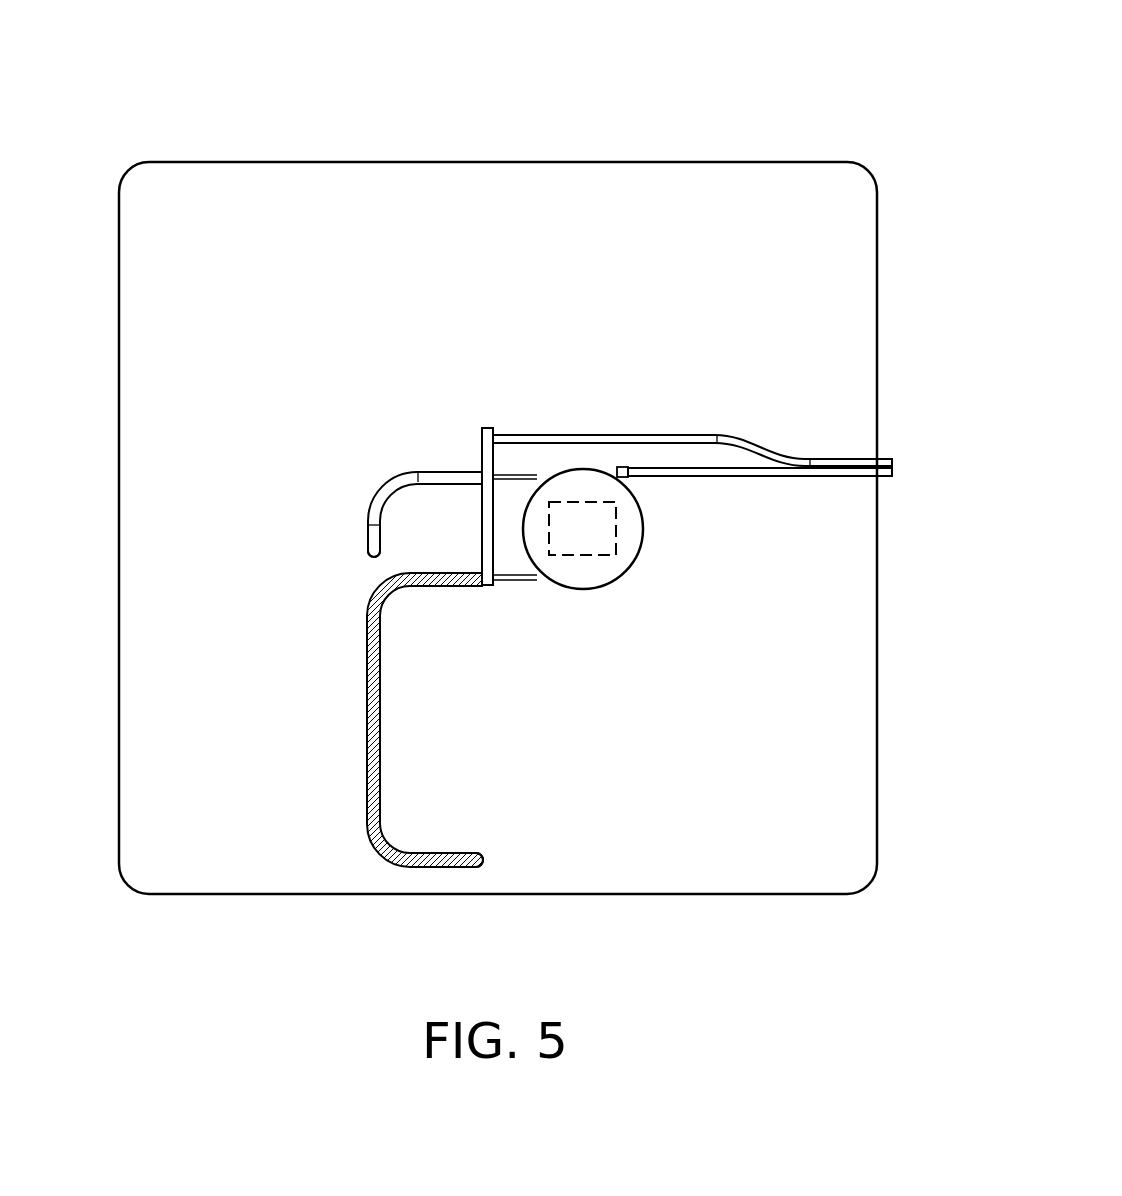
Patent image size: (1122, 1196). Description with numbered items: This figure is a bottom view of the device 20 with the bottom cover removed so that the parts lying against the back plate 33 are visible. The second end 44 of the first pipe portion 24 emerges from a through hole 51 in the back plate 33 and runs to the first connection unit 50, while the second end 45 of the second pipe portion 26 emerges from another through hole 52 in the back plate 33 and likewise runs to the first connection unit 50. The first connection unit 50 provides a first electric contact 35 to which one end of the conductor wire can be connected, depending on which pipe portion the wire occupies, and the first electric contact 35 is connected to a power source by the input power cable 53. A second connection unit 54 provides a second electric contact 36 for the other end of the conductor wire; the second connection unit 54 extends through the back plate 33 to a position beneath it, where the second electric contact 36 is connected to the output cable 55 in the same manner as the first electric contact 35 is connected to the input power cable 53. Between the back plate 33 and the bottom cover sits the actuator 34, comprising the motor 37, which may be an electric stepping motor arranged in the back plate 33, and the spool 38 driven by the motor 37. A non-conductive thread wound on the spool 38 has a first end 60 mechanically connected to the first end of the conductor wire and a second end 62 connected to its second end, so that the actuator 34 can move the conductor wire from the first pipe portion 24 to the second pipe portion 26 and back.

The device 20 is at (748, 80).
The back plate 33 is at (203, 335).
The first electric contact 35 is at (478, 454).
The first connection unit 50 is at (463, 420).
The first end of the thread 60 is at (523, 477).
The motor 37 is at (582, 502).
The second electric contact 36 is at (622, 466).
The input power cable 53 is at (822, 452).
The output cable 55 is at (820, 480).
The second connection unit 54 is at (663, 487).
The spool 38 is at (593, 570).
The first pipe portion 24 is at (387, 495).
The second end of the first pipe portion 44 is at (368, 530).
The through hole 51 is at (367, 553).
The second pipe portion 26 is at (365, 758).
The second end of the second pipe portion 45 is at (433, 870).
The through hole 52 is at (460, 870).
The second end of the thread 62 is at (522, 580).
The actuator 34 is at (576, 610).